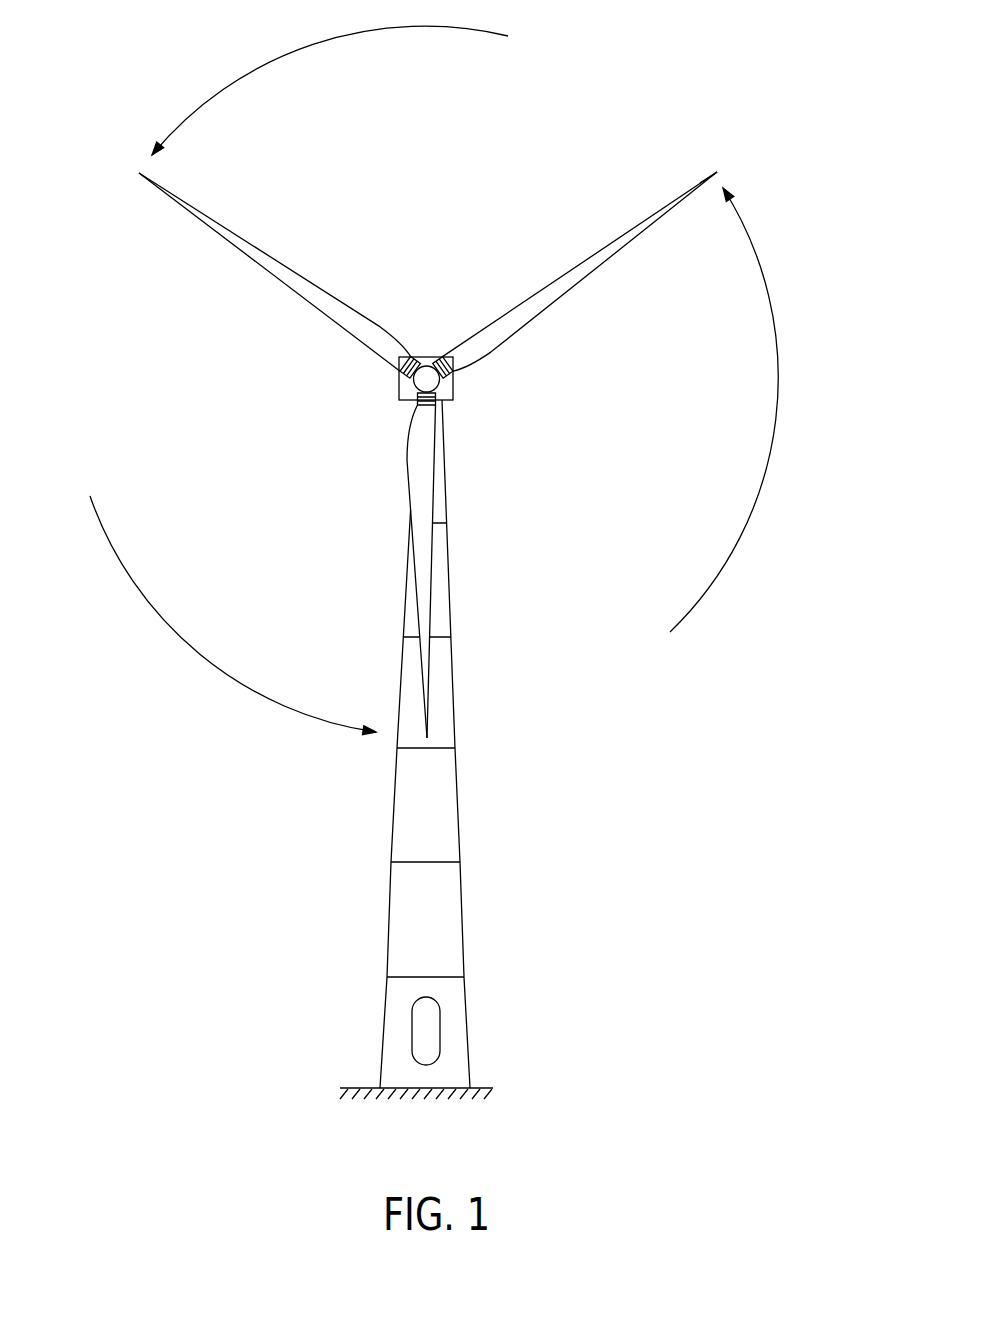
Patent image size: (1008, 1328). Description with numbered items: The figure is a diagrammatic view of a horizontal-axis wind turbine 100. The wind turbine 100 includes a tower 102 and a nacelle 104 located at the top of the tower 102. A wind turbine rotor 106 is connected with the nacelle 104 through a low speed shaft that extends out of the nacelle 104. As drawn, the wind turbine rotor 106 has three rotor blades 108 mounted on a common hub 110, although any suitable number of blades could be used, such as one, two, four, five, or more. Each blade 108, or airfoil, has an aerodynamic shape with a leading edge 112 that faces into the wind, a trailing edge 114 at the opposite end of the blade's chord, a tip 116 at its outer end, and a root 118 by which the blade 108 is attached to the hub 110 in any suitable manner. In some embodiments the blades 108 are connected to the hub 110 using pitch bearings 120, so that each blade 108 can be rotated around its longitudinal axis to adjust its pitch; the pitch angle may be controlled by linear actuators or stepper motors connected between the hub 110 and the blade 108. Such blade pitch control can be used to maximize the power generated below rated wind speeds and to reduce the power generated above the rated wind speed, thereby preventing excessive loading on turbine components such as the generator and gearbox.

The horizontal-axis wind turbine 100 is at (373, 927).
The tower 102 is at (450, 818).
The nacelle 104 is at (453, 398).
The wind turbine rotor 106 is at (368, 377).
The rotor blade 108 is at (267, 264).
The hub 110 is at (426, 378).
The leading edge 112 is at (605, 246).
The trailing edge 114 is at (598, 273).
The tip 116 is at (722, 170).
The root 118 is at (463, 375).
The pitch bearing 120 is at (447, 362).